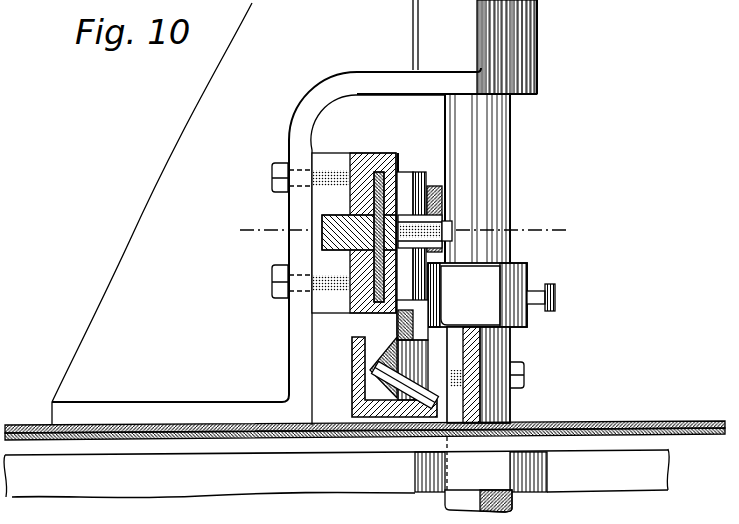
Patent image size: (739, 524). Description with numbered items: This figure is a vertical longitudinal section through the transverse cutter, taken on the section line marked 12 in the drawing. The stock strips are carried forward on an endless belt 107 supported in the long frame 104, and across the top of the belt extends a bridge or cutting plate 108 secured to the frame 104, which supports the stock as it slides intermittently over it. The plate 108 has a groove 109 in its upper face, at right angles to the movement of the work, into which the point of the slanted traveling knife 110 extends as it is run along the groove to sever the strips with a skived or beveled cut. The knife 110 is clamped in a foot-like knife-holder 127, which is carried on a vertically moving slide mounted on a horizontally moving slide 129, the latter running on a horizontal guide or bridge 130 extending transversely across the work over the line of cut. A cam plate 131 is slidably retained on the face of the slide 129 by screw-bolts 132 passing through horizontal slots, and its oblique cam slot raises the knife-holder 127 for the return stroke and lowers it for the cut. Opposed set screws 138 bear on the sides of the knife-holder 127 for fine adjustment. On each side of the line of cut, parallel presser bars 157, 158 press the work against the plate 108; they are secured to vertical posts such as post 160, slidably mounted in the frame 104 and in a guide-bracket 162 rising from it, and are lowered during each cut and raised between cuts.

The section line 12- 12 is at (236, 215).
The frame 104 is at (188, 482).
The endless belt 107 is at (353, 442).
The bridge or cutting plate 108 is at (509, 441).
The groove 109 is at (455, 440).
The traveling knife 110 is at (455, 412).
The knife-holder 127 is at (397, 370).
The horizontally moving slide 129 is at (398, 175).
The horizontal guide or bridge 130 is at (370, 140).
The cam plate 131 is at (440, 193).
The screw-bolts 132 is at (450, 218).
The set screws 138 is at (413, 320).
The presser bar 157 is at (422, 420).
The presser bar 158 is at (473, 363).
The vertical post 160 is at (500, 123).
The guide-bracket 162 is at (537, 73).